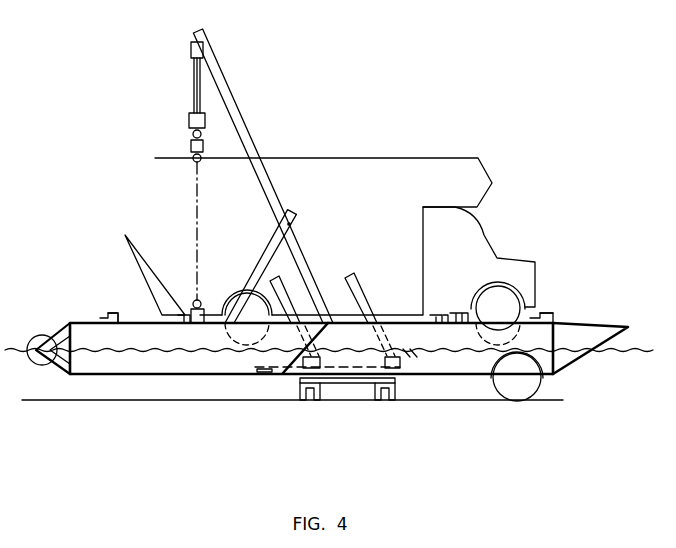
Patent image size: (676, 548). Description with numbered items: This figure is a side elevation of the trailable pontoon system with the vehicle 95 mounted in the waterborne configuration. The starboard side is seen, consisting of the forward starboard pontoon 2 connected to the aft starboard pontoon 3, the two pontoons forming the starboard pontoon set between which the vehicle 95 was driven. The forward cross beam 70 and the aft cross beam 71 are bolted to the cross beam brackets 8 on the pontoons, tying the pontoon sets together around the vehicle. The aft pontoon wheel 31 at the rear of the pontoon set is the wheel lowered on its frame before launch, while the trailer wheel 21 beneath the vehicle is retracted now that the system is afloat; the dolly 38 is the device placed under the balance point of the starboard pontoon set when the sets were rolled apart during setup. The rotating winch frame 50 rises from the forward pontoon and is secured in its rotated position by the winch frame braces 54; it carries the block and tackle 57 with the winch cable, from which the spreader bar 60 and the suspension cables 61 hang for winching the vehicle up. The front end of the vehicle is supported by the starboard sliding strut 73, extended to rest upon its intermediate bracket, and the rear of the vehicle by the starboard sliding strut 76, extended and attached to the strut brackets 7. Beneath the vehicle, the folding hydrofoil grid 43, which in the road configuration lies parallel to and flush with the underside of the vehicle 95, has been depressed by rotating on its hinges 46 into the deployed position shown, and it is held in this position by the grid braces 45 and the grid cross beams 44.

The forward starboard pontoon 2 is at (490, 388).
The aft starboard pontoon 3 is at (136, 367).
The strut brackets 7 is at (452, 313).
The cross beam brackets 8 is at (546, 316).
The trailer wheel 21 is at (518, 380).
The aft pontoon wheel 31 is at (38, 335).
The dolly 38 is at (295, 377).
The folding hydrofoil grid 43 is at (258, 372).
The grid cross beams 44 is at (372, 380).
The grid braces 45 is at (353, 277).
The hinges 46 is at (432, 316).
The rotating winch frame 50 is at (242, 128).
The winch frame braces 54 is at (272, 238).
The block and tackle 57 is at (193, 82).
The spreader bar 60 is at (190, 146).
The suspension cables 61 is at (195, 225).
The forward cross beam 70 is at (553, 316).
The aft cross beam 71 is at (112, 315).
The starboard sliding strut 73 is at (463, 315).
The starboard sliding strut 76 is at (207, 313).
The vehicle 95 is at (358, 175).